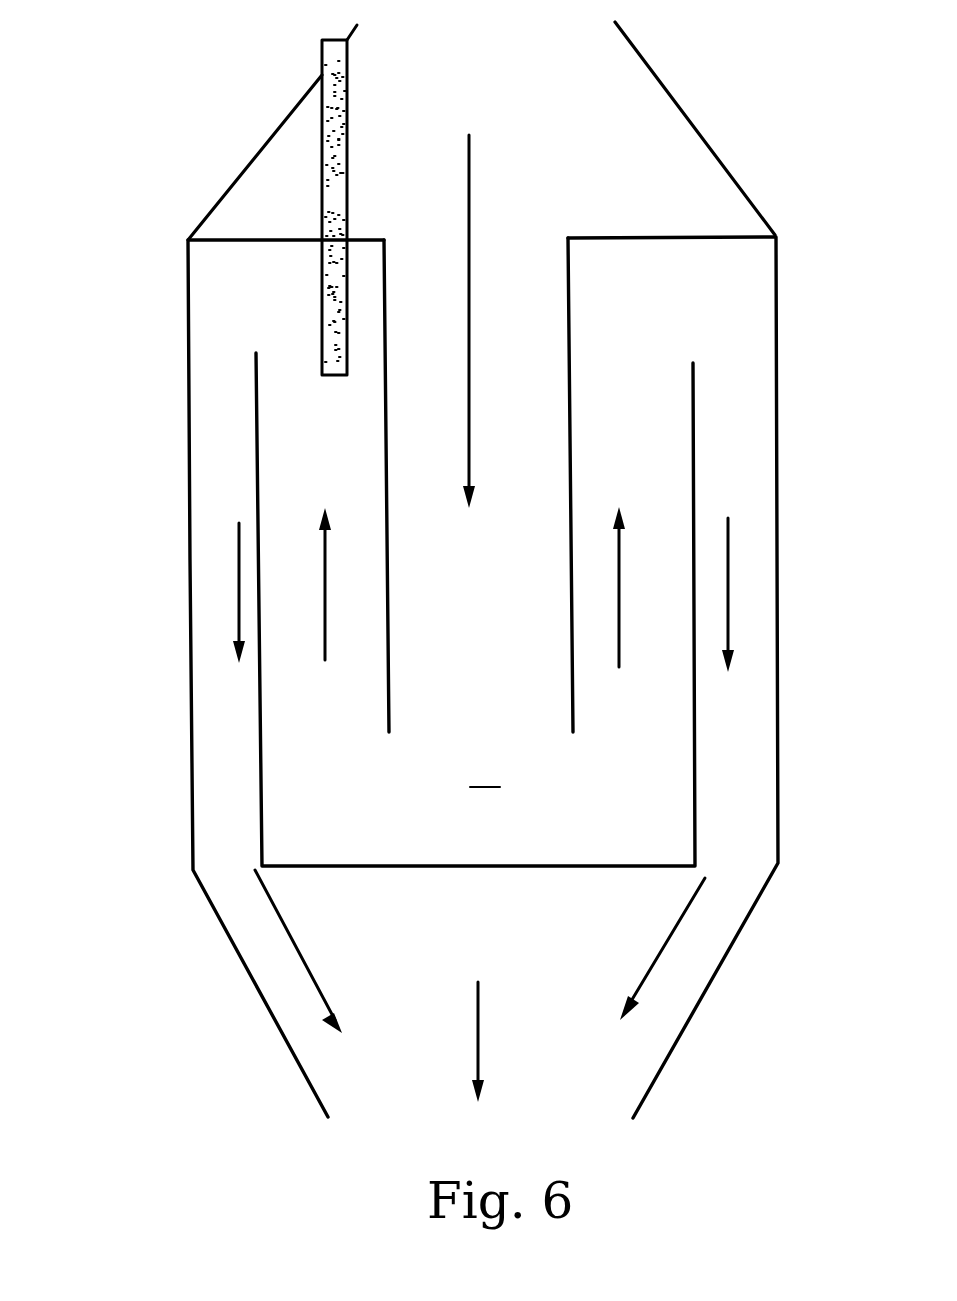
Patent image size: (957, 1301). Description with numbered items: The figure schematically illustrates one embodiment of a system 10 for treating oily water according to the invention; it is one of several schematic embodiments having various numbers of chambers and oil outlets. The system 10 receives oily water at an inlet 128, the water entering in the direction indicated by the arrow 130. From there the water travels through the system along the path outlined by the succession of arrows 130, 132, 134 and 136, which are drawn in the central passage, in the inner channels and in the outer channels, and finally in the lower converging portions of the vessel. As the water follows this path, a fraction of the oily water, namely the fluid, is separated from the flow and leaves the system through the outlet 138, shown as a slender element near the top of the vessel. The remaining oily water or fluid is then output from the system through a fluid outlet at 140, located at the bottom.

The system 10 is at (150, 235).
The inlet 128 is at (527, 283).
The arrow 130 is at (469, 170).
The arrow 132 is at (325, 645).
The arrow 134 is at (239, 595).
The arrow 136 is at (290, 945).
The outlet 138 is at (322, 75).
The fluid outlet 140 is at (478, 1052).